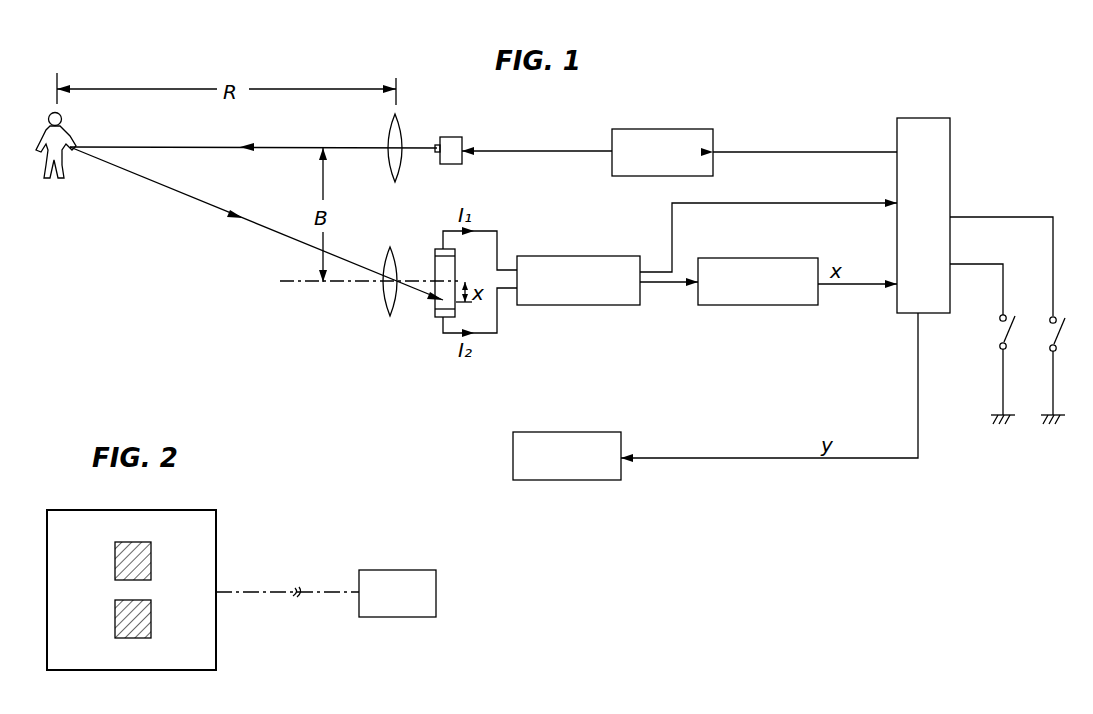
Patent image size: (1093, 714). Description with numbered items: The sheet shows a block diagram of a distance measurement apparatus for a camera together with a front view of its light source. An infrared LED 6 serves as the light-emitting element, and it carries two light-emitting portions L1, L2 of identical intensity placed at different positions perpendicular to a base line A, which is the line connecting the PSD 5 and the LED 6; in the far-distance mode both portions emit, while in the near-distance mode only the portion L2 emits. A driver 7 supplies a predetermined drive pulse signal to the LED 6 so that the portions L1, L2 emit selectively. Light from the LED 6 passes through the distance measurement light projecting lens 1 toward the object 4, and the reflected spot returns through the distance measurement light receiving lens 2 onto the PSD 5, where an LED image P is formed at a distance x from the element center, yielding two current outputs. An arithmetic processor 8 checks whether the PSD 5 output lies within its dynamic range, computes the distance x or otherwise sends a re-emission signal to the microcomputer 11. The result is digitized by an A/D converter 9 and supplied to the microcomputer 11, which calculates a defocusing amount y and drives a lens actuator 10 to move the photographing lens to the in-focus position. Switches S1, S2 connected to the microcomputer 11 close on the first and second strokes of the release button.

In FIG. 1, the distance measurement light projecting lens 1 is at (390, 137).
In FIG. 1, the distance measurement light receiving lens 2 is at (386, 300).
In FIG. 1, the object 4 is at (66, 132).
In FIG. 1, the PSD (Position Sensitive Device) 5 is at (437, 262).
In FIG. 2, the PSD (Position Sensitive Device) 5 is at (412, 571).
In FIG. 1, the infrared LED 6 is at (452, 138).
In FIG. 2, the infrared LED 6 is at (175, 511).
In FIG. 1, the driver 7 is at (700, 130).
In FIG. 1, the arithmetic processor 8 is at (618, 257).
In FIG. 1, the A/D converter 9 is at (803, 259).
In FIG. 1, the lens actuator 10 is at (600, 433).
In FIG. 1, the microcomputer 11 is at (933, 118).
In FIG. 1, the switch S1 is at (1015, 369).
In FIG. 1, the switch S2 is at (1065, 370).
In FIG. 2, the light-emitting portion L1 is at (152, 558).
In FIG. 2, the light-emitting portion L2 is at (152, 617).
In FIG. 2, the base line A is at (238, 592).
In FIG. 1, the LED image P is at (440, 305).